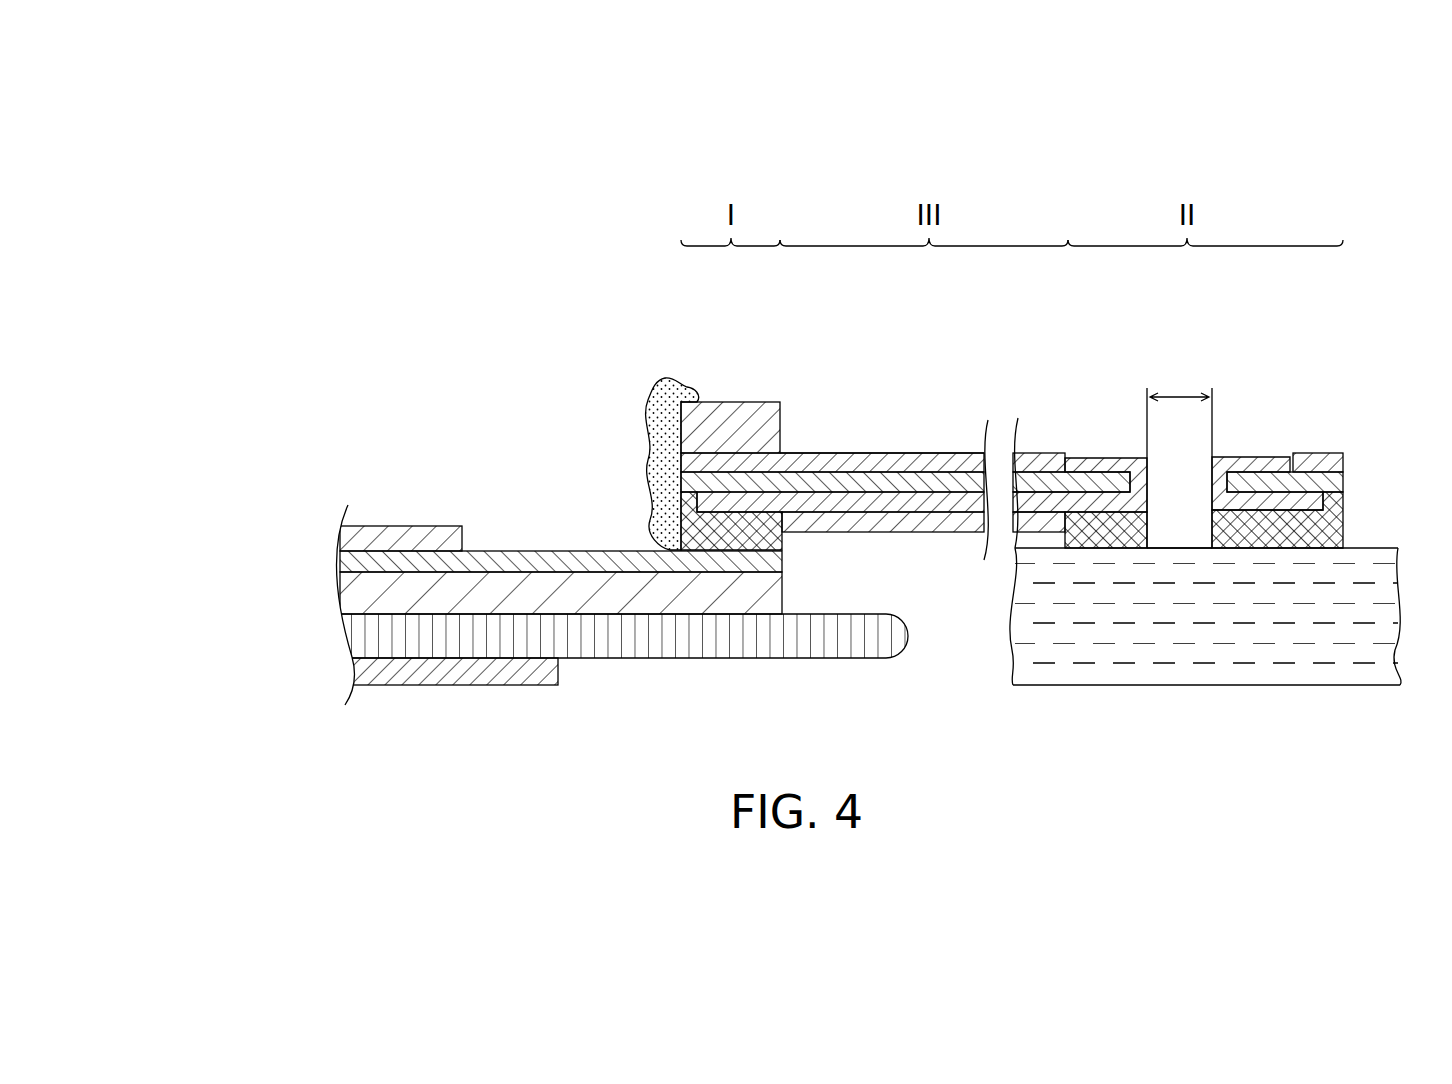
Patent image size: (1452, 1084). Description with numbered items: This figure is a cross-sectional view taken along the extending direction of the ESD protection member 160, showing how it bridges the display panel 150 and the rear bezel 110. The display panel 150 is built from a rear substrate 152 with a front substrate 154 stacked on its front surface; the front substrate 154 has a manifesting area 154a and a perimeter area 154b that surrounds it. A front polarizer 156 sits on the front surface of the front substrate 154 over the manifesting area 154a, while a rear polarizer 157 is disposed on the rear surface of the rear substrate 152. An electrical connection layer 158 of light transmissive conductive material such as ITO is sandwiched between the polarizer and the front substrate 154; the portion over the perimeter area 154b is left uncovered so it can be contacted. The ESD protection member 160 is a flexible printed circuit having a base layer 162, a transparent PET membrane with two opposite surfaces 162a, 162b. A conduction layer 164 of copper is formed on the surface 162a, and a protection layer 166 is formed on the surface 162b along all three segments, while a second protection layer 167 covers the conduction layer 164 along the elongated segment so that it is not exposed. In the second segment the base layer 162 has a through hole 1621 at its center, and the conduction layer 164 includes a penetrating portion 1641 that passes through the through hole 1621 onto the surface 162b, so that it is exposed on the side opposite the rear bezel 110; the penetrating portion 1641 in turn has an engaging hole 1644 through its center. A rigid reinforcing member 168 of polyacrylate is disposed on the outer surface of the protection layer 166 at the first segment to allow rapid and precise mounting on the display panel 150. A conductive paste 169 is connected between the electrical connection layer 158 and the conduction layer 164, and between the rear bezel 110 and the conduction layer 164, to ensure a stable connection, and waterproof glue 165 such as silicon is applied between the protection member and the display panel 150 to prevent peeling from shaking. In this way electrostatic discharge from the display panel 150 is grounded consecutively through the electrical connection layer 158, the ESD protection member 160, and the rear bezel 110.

The rear bezel 110 is at (1294, 667).
The display panel 150 is at (528, 540).
The rear substrate 152 is at (397, 637).
The front substrate 154 is at (413, 596).
The manifesting area 154a is at (431, 596).
The perimeter area 154b is at (593, 597).
The front polarizer 156 is at (417, 537).
The rear polarizer 157 is at (388, 667).
The electrical connection layer 158 is at (418, 560).
The ESD protection member 160 is at (1008, 534).
The base layer 162 is at (1057, 416).
The surface 162a is at (1345, 502).
The surface 162b is at (1343, 459).
The through hole 1621 is at (1180, 500).
The conduction layer 164 is at (849, 512).
The penetrating portion 1641 is at (1255, 457).
The engaging hole 1644 is at (1177, 380).
The waterproof glue 165 is at (660, 398).
The protection layer 166 is at (907, 455).
The protection layer 167 is at (925, 532).
The reinforcing member 168 is at (746, 402).
The conductive paste 169 is at (653, 532).